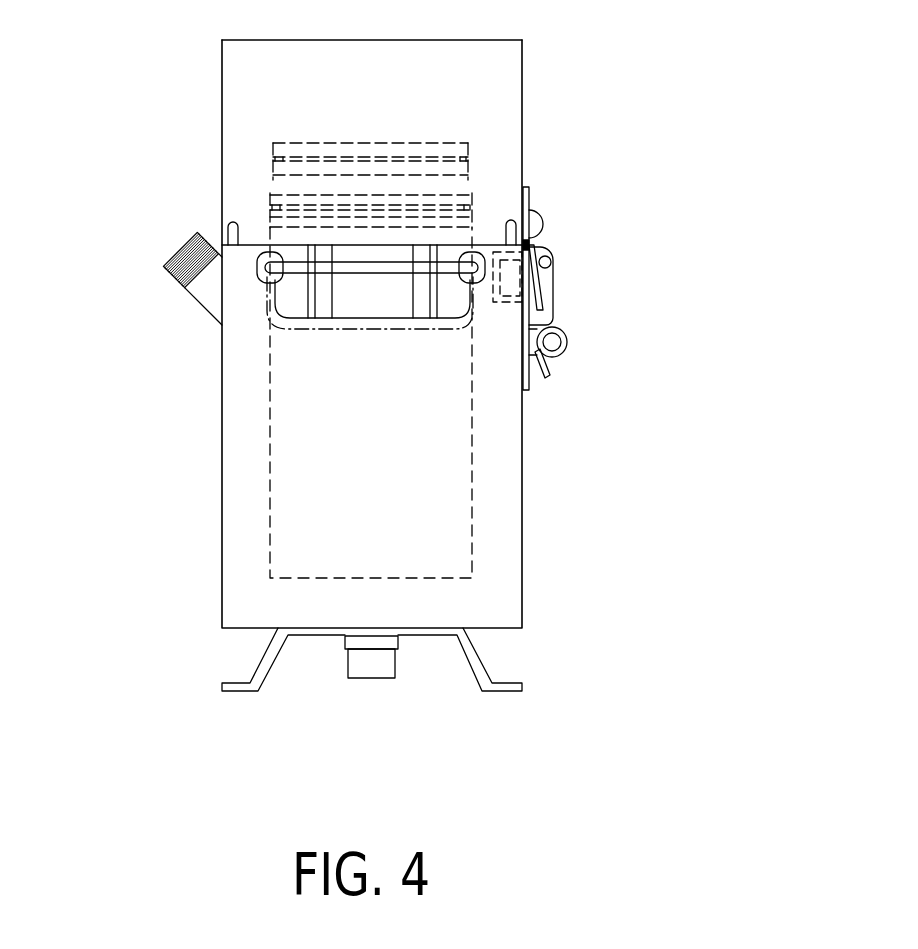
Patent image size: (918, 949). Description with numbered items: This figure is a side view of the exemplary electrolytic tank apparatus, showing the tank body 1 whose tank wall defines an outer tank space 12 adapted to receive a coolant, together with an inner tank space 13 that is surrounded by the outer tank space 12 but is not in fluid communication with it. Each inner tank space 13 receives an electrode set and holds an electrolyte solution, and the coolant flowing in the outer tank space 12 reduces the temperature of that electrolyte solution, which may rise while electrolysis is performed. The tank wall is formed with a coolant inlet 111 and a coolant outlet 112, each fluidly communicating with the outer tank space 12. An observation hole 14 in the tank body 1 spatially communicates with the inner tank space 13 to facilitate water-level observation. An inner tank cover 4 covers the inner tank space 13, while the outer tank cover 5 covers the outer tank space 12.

The tank body 1 is at (195, 430).
The inner tank cover 4 is at (393, 143).
The outer tank cover 5 is at (522, 72).
The outer tank space 12 is at (505, 515).
The inner tank space 13 is at (473, 570).
The observation hole 14 is at (507, 285).
The coolant inlet 111 is at (178, 247).
The coolant outlet 112 is at (373, 678).